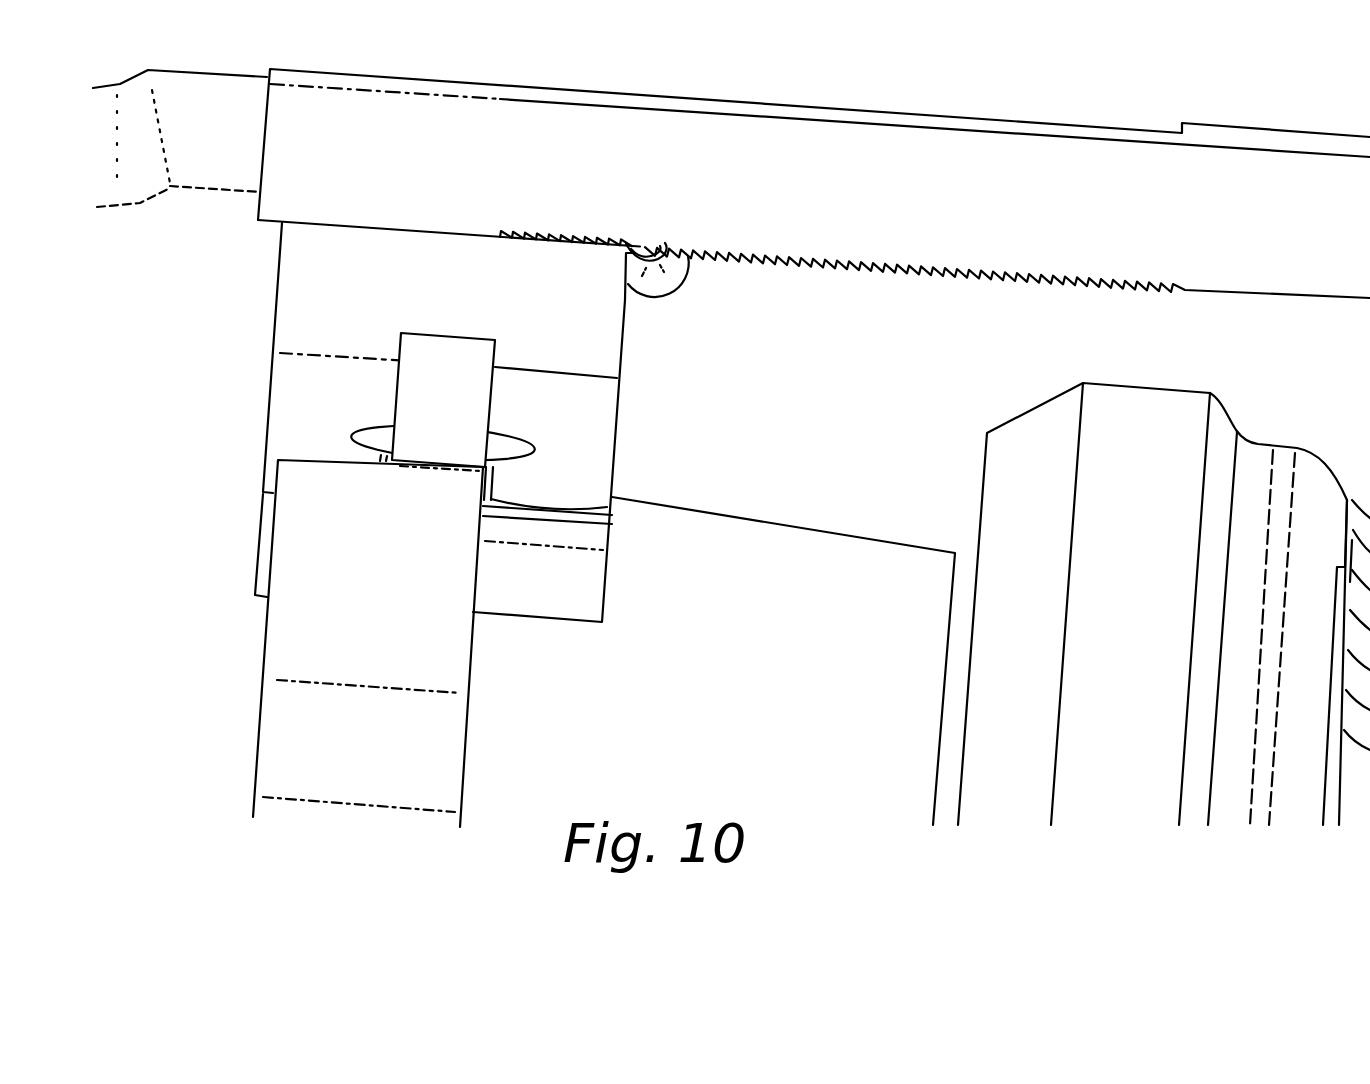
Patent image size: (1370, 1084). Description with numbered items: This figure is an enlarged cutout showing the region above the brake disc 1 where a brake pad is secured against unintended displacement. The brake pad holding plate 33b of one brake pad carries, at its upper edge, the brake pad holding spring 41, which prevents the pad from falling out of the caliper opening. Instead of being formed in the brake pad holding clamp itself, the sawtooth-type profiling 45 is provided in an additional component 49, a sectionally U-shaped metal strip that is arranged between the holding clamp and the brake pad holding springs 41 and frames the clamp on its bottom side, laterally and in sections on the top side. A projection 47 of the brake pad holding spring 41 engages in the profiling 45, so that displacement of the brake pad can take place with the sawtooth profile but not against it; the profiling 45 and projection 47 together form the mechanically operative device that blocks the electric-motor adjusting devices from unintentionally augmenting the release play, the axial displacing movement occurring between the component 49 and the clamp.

The brake disc 1 is at (1131, 415).
The brake pad holding plate 33b is at (315, 740).
The brake pad holding spring 41 is at (593, 425).
The sawtooth-type profiling 45 is at (826, 256).
The projection of the brake pad holding spring 47 is at (667, 263).
The sectionally U-shaped metal strip 49 is at (447, 106).